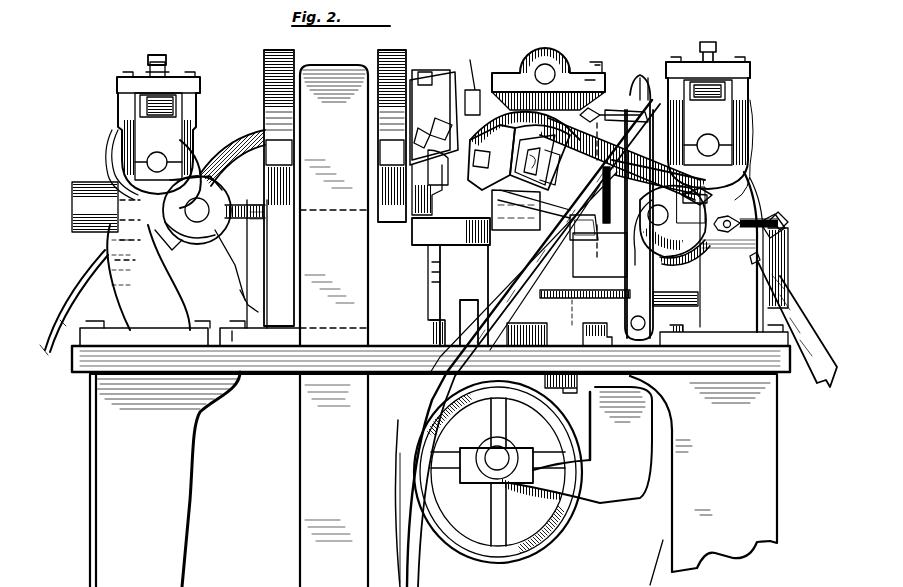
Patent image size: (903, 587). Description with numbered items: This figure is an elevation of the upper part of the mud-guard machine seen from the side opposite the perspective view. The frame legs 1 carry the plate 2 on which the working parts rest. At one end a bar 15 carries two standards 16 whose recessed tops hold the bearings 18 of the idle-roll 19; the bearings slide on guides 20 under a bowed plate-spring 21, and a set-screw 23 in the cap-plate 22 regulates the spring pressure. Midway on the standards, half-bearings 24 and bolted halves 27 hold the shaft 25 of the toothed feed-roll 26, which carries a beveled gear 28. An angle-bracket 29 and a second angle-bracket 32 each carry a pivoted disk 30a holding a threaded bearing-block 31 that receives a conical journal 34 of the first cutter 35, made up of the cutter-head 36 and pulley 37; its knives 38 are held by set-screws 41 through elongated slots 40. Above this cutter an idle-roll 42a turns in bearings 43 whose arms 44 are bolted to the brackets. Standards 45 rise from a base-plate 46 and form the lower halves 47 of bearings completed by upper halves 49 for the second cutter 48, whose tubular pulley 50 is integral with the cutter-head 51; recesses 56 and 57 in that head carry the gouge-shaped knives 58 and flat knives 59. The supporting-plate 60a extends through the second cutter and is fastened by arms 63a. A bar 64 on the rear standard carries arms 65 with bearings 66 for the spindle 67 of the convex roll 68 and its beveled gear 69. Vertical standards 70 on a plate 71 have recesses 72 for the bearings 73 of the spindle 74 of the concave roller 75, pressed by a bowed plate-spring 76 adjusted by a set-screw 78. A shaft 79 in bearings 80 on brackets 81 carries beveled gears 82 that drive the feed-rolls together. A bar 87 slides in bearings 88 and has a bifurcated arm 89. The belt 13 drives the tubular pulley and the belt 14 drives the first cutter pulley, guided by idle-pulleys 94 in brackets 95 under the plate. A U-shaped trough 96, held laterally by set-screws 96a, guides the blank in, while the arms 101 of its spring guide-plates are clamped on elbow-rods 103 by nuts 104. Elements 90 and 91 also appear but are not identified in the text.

The legs 1 is at (433, 479).
The plate 2 is at (268, 352).
The belt 13 is at (334, 479).
The belt 14 is at (423, 503).
The bar 15 is at (724, 337).
The standards 16 is at (731, 252).
The bearings 18 is at (709, 128).
The idle-roll 19 is at (634, 165).
The guides 20 is at (728, 92).
The bowed plate-spring 21 is at (690, 80).
The cap-plate 22 is at (748, 65).
The set-screw 23 is at (717, 48).
The half-bearing 24 is at (688, 240).
The shaft 25 is at (712, 212).
The feed-roll 26 is at (690, 258).
The other halves of the bearings 27 is at (712, 198).
The beveled gear 28 is at (658, 240).
The angle-bracket 29 is at (572, 286).
The disk 30a is at (611, 562).
The bearing-block 31 is at (491, 157).
The angle-bracket 32 is at (458, 295).
The conical journals 34 is at (584, 224).
The first cutter 35 is at (534, 201).
The cutter-head 36 is at (516, 210).
The pulley 37 is at (544, 157).
The knives 38 is at (525, 120).
The elongated slot 40 is at (555, 167).
The set-screw 41 is at (549, 161).
The idle-roll 42a is at (570, 58).
The bearings 43 is at (602, 72).
The arms 44 is at (594, 190).
The standards 45 is at (323, 264).
The base-plate 46 is at (260, 333).
The lower halves of bearings 47 is at (335, 188).
The second cutter 48 is at (431, 115).
The upper halves of bearings 49 is at (292, 58).
The tubular pulley 50 is at (376, 70).
The cutter-head 51 is at (455, 78).
The recesses 56 is at (446, 121).
The recesses 57 is at (427, 188).
The knives 58 is at (421, 132).
The knives 59 is at (432, 72).
The plate 60a is at (475, 90).
The arm 63a is at (472, 258).
The bar 64 is at (246, 300).
The arms 65 is at (221, 265).
The bearings 66 is at (200, 246).
The spindle 67 is at (200, 200).
The roll 68 is at (245, 213).
The beveled gear 69 is at (170, 250).
The vertical standards 70 is at (148, 277).
The plate 71 is at (145, 333).
The recesses 72 is at (180, 105).
The bearings 73 is at (158, 133).
The spindle 74 is at (147, 163).
The roller 75 is at (112, 160).
The bowed plate-spring 76 is at (166, 92).
The set-screw 78 is at (156, 56).
The shaft 79 is at (523, 272).
The bearings 80 is at (80, 215).
The brackets 81 is at (98, 252).
The beveled gear 82 is at (127, 235).
The bar 87 is at (698, 296).
The bearings 88 is at (440, 318).
The upturned bifurcated arm 89 is at (440, 275).
The pivot 90 is at (641, 332).
The lever 91 is at (632, 88).
The idle-pulleys 94 is at (538, 535).
The brackets 95 is at (556, 445).
The U-shaped trough 96 is at (795, 296).
The set-screws 96a is at (762, 258).
The arms 101 is at (812, 243).
The elbow-rods 103 is at (642, 118).
The nuts 104 is at (782, 215).